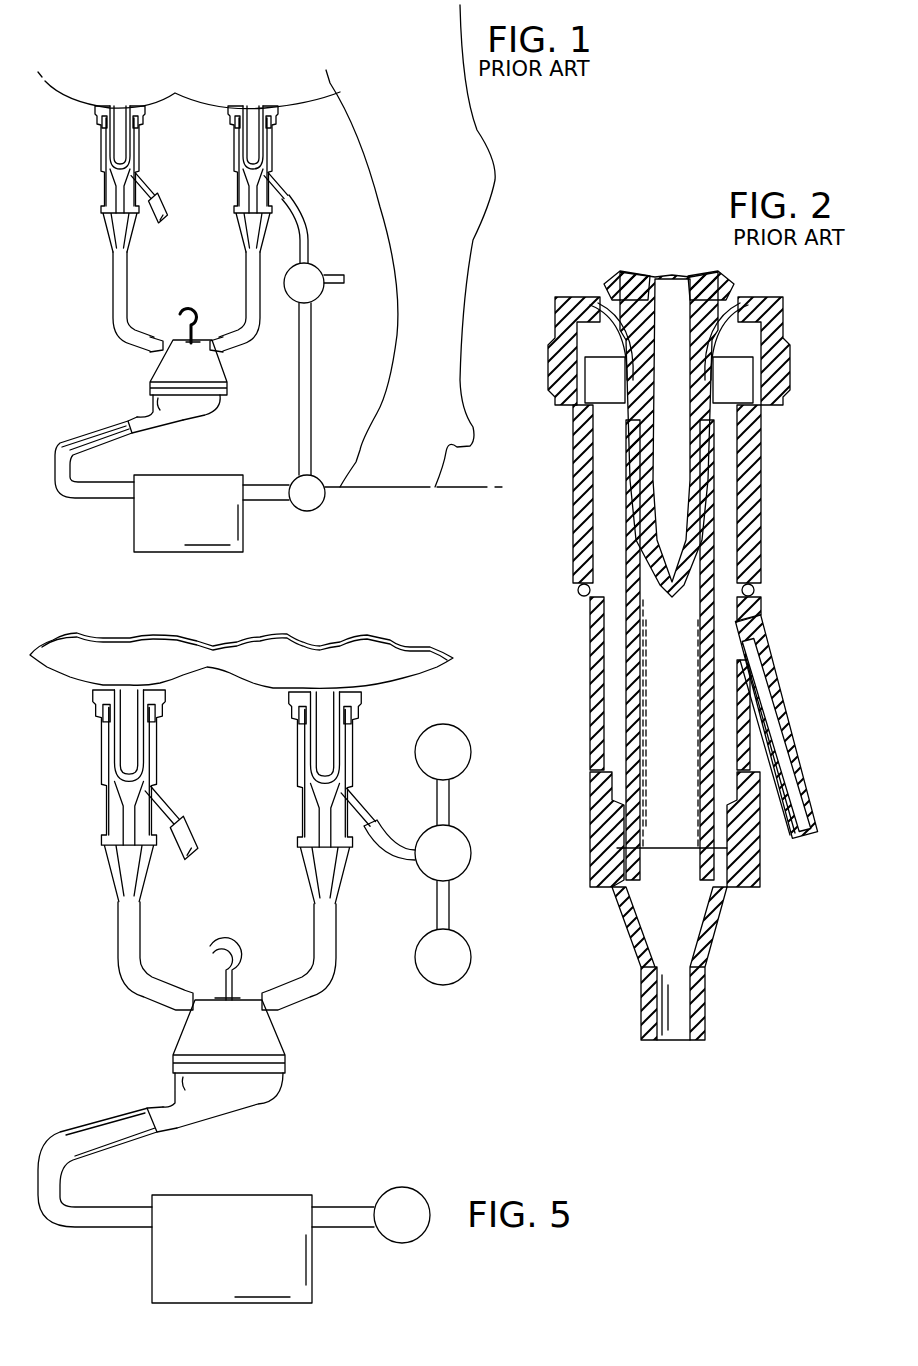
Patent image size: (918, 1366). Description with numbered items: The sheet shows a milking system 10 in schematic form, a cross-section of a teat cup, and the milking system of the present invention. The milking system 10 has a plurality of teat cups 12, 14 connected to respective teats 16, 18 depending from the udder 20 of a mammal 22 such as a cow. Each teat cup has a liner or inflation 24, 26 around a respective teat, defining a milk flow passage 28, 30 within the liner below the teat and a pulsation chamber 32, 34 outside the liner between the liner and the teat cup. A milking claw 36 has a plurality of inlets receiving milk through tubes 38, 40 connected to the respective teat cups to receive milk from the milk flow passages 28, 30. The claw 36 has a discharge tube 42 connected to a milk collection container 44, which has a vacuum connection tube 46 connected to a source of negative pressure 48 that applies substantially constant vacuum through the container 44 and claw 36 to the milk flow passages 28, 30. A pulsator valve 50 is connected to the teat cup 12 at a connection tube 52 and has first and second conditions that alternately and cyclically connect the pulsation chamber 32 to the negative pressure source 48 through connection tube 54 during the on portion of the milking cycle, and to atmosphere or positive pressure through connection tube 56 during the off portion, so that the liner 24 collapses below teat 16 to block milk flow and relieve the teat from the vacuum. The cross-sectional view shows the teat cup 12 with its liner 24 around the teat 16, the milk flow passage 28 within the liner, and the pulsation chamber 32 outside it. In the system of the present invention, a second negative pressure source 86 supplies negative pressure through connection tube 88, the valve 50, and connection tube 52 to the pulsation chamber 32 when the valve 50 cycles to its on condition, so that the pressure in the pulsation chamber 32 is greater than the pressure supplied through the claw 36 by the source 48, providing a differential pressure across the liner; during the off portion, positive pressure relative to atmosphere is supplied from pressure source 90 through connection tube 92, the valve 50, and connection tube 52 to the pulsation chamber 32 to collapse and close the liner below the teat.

In FIG. 1, the milking system 10 is at (93, 362).
In FIG. 1, the teat cup 12 is at (228, 145).
In FIG. 2, the teat cup 12 is at (578, 640).
In FIG. 5, the teat cup 12 is at (299, 762).
In FIG. 1, the teat cup 14 is at (100, 150).
In FIG. 5, the teat cup 14 is at (102, 758).
In FIG. 1, the teat 16 is at (251, 118).
In FIG. 2, the teat 16 is at (643, 280).
In FIG. 5, the teat 16 is at (328, 716).
In FIG. 1, the teat 18 is at (118, 118).
In FIG. 5, the teat 18 is at (130, 716).
In FIG. 1, the udder 20 is at (310, 100).
In FIG. 1, the mammal 22 is at (486, 134).
In FIG. 1, the liner 24 is at (243, 185).
In FIG. 2, the liner 24 is at (629, 672).
In FIG. 1, the liner 26 is at (106, 190).
In FIG. 1, the milk flow passage 28 is at (248, 190).
In FIG. 2, the milk flow passage 28 is at (660, 718).
In FIG. 1, the milk flow passage 30 is at (112, 192).
In FIG. 1, the pulsation chamber 32 is at (265, 180).
In FIG. 2, the pulsation chamber 32 is at (743, 612).
In FIG. 1, the pulsation chamber 34 is at (134, 175).
In FIG. 1, the milking claw 36 is at (208, 408).
In FIG. 5, the milking claw 36 is at (258, 1097).
In FIG. 1, the tube 38 is at (243, 282).
In FIG. 5, the tube 38 is at (317, 930).
In FIG. 1, the tube 40 is at (112, 296).
In FIG. 5, the tube 40 is at (117, 938).
In FIG. 1, the discharge tube 42 is at (98, 430).
In FIG. 5, the discharge tube 42 is at (87, 1120).
In FIG. 1, the milk collection container 44 is at (160, 553).
In FIG. 5, the milk collection container 44 is at (228, 1205).
In FIG. 1, the vacuum connection tube 46 is at (264, 500).
In FIG. 5, the vacuum connection tube 46 is at (330, 1210).
In FIG. 1, the source of negative pressure 48 is at (316, 510).
In FIG. 5, the source of negative pressure 48 is at (395, 1190).
In FIG. 1, the pulsator valve 50 is at (318, 292).
In FIG. 5, the pulsator valve 50 is at (470, 858).
In FIG. 1, the connection tube 52 is at (300, 232).
In FIG. 5, the connection tube 52 is at (385, 843).
In FIG. 1, the connection tube 54 is at (305, 396).
In FIG. 1, the connection tube 56 is at (340, 283).
In FIG. 5, the second negative pressure source 86 is at (455, 980).
In FIG. 5, the connection tube 88 is at (450, 905).
In FIG. 5, the pressure source 90 is at (440, 735).
In FIG. 5, the connection tube 92 is at (450, 805).